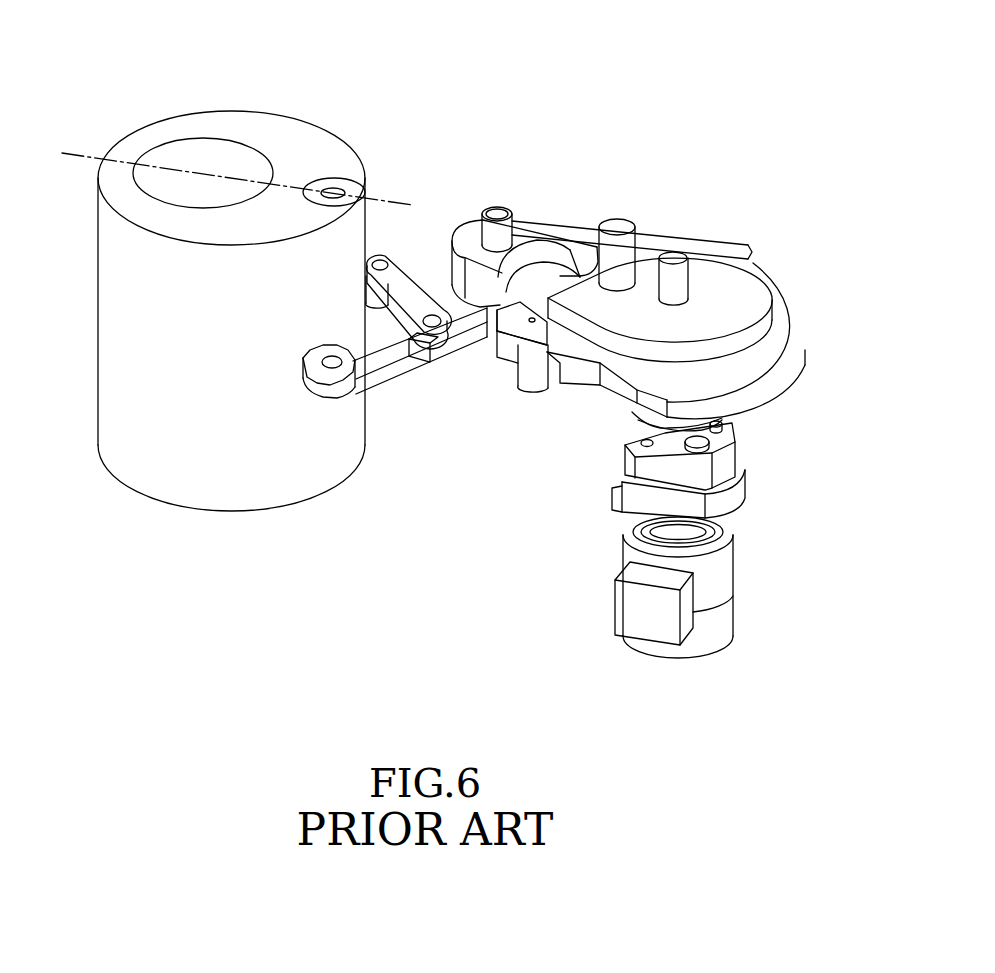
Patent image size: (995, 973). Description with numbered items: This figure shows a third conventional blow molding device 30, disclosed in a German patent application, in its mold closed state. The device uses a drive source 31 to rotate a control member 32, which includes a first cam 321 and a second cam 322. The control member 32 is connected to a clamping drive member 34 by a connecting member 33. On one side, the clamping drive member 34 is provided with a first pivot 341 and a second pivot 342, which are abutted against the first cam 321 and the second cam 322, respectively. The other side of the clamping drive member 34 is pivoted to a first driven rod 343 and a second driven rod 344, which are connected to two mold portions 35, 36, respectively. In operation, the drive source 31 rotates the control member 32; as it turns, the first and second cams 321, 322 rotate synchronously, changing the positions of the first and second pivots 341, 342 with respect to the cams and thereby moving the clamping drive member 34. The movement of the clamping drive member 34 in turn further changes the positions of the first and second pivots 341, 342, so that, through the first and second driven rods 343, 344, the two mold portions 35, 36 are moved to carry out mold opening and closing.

The blow molding device 30 is at (428, 152).
The drive source 31 is at (723, 568).
The control member 32 is at (748, 190).
The first cam 321 is at (788, 303).
The second cam 322 is at (742, 275).
The connecting member 33 is at (655, 240).
The clamping drive member 34 is at (467, 232).
The first pivot 341 is at (537, 357).
The second pivot 342 is at (560, 260).
The first driven rod 343 is at (400, 363).
The second driven rod 344 is at (416, 287).
The mold portion 35 is at (142, 207).
The mold portion 36 is at (181, 121).